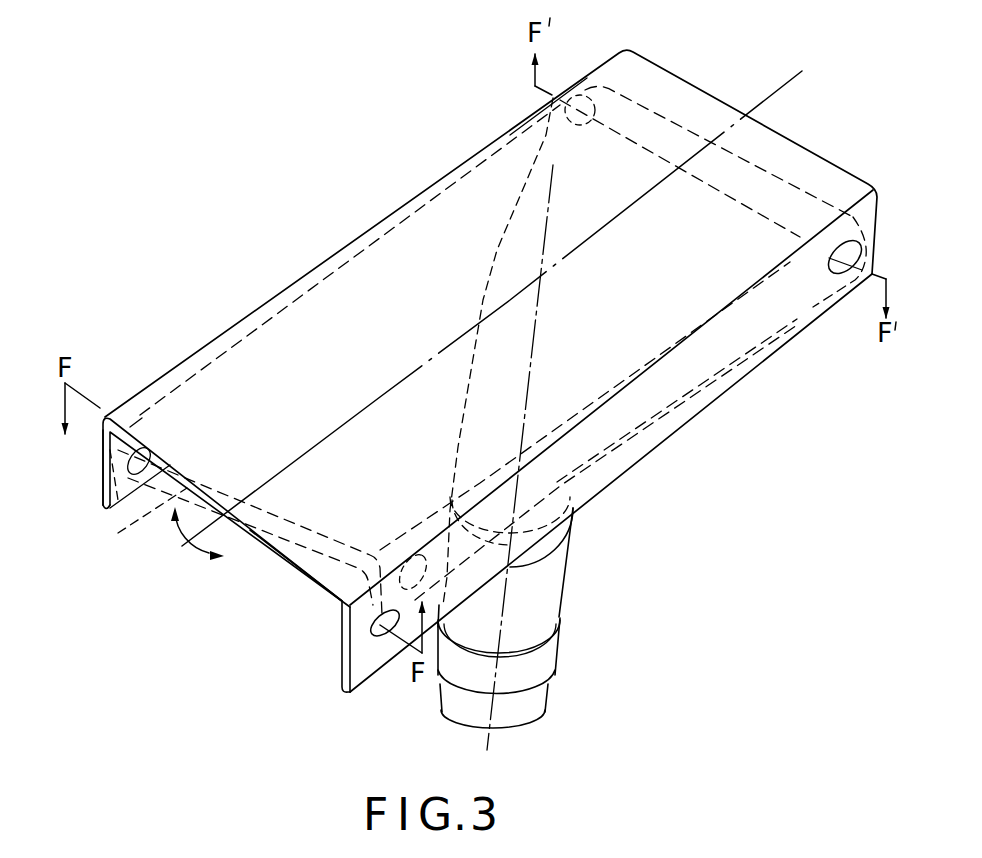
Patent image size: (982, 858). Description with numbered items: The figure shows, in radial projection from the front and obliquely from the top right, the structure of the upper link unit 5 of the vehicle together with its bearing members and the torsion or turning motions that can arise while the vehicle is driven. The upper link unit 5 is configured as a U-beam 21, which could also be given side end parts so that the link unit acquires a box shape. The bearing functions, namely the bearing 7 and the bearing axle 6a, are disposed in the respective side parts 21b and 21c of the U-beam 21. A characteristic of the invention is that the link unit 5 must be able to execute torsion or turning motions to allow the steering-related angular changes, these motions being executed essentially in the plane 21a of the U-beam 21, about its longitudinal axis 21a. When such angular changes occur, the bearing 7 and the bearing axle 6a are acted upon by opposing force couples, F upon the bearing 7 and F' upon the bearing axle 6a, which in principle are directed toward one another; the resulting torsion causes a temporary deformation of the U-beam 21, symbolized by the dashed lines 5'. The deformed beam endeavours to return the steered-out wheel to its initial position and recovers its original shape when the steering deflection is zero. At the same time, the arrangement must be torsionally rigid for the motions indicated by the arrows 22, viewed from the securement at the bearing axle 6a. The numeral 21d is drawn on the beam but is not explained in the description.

The upper link unit 5 is at (491, 400).
The deformed U-beam (dashed lines) 5' is at (488, 350).
The bearing axle 6a is at (553, 91).
The bearing 7 is at (386, 637).
The U-beam 21 is at (255, 557).
The plane or longitudinal axis of the U-beam 21a is at (322, 562).
The side part of the U-beam 21b is at (101, 488).
The side part of the U-beam 21c is at (337, 663).
The bracket bend line 21d is at (787, 83).
The arrows indicating torsionally rigid motions 22 is at (191, 539).